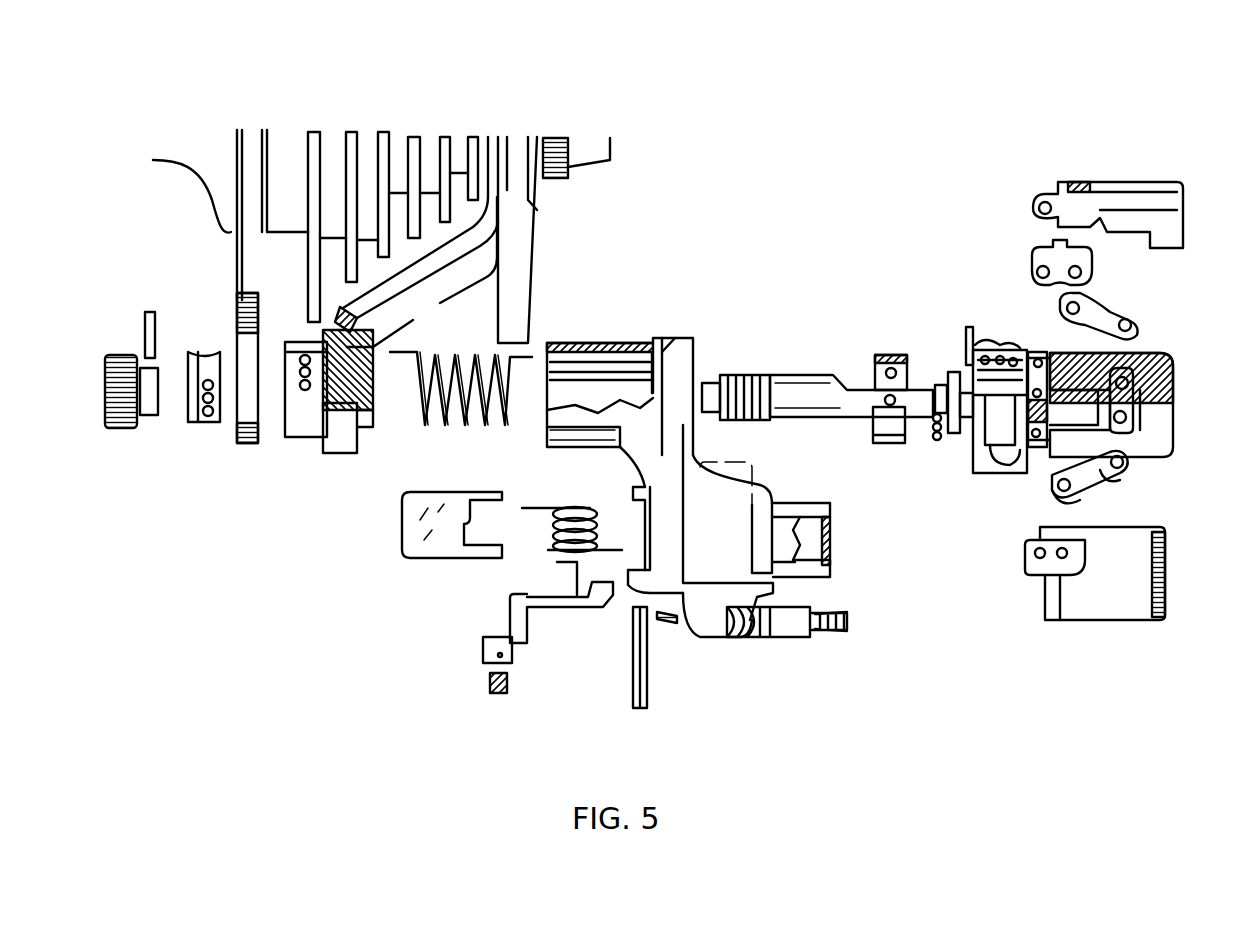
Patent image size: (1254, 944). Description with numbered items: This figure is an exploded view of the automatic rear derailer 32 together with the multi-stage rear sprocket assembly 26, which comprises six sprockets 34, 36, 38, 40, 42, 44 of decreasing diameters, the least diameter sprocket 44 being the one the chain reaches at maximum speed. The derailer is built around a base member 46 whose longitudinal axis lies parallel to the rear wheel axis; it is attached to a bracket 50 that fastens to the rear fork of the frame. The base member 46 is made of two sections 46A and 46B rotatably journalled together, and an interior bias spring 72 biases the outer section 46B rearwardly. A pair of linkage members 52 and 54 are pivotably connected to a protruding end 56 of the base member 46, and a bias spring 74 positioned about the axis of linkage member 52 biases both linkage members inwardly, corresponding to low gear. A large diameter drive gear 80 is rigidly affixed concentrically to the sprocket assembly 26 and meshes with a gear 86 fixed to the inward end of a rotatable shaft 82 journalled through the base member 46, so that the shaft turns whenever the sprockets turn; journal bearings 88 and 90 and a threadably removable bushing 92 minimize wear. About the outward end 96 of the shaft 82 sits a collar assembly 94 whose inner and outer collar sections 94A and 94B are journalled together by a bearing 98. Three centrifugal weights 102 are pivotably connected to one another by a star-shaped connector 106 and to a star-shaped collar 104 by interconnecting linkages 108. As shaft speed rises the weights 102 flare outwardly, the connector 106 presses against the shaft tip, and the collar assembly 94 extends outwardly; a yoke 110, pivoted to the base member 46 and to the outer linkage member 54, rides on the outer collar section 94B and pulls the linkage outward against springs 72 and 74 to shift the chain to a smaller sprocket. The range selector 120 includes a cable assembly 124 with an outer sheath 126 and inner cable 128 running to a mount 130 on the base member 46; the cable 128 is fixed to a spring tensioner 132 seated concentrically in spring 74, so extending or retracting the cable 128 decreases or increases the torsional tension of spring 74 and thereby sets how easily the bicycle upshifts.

The multi-stage rear sprocket assembly 26 is at (693, 77).
The rear derailer 32 is at (905, 162).
The sprocket 34 is at (313, 150).
The sprocket 36 is at (352, 150).
The sprocket 38 is at (384, 150).
The sprocket 40 is at (413, 145).
The sprocket 42 is at (447, 150).
The least diameter sprocket 44 is at (473, 140).
The base member 46 is at (588, 323).
The inner section of base member 46A is at (332, 443).
The outer section of base member 46B is at (612, 343).
The bracket 50 is at (464, 283).
The linkage member 52 is at (405, 530).
The outer linkage member 54 is at (830, 533).
The protruding end 56 is at (744, 530).
The interior bias spring 72 is at (433, 423).
The bias spring 74 is at (555, 508).
The large diameter drive gear 80 is at (236, 300).
The rotatable shaft 82 is at (875, 393).
The gear 86 is at (133, 430).
The journal bearing 88 is at (257, 427).
The journal bearing 90 is at (935, 433).
The threadably removable bushing 92 is at (793, 383).
The collar assembly 94 is at (968, 497).
The inner collar section 94A is at (982, 367).
The outer collar section 94B is at (988, 347).
The outward end of the shaft 96 is at (1092, 352).
The bearing 98 is at (980, 365).
The centrifugal weights 102 is at (1133, 192).
The star-shaped collar 104 is at (1038, 447).
The star-shaped connector 106 is at (1135, 385).
The interconnecting linkages 108 is at (1100, 305).
The yoke 110 is at (987, 457).
The range selector 120 is at (598, 677).
The cable assembly 124 is at (756, 657).
The outer sheath 126 is at (787, 622).
The inner cable 128 is at (664, 624).
The mount 130 is at (712, 633).
The spring tensioner 132 is at (535, 627).